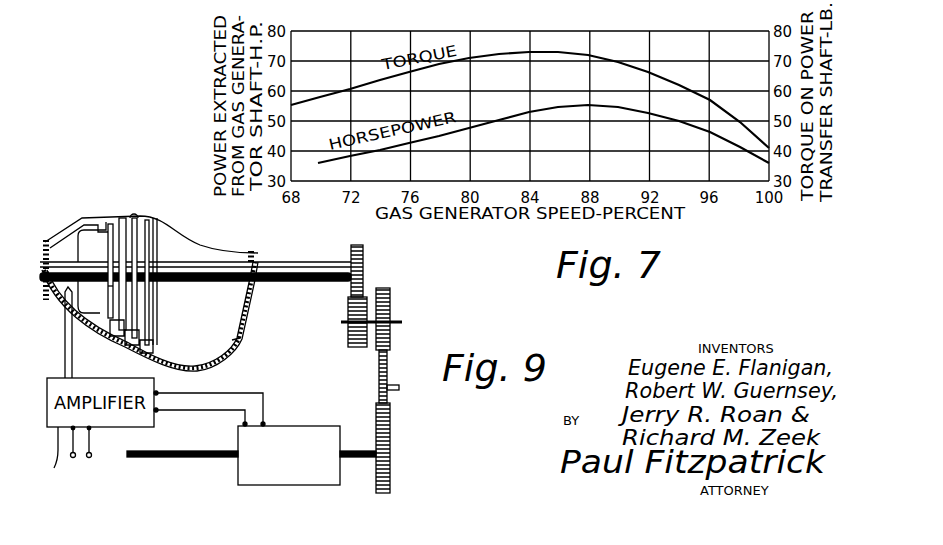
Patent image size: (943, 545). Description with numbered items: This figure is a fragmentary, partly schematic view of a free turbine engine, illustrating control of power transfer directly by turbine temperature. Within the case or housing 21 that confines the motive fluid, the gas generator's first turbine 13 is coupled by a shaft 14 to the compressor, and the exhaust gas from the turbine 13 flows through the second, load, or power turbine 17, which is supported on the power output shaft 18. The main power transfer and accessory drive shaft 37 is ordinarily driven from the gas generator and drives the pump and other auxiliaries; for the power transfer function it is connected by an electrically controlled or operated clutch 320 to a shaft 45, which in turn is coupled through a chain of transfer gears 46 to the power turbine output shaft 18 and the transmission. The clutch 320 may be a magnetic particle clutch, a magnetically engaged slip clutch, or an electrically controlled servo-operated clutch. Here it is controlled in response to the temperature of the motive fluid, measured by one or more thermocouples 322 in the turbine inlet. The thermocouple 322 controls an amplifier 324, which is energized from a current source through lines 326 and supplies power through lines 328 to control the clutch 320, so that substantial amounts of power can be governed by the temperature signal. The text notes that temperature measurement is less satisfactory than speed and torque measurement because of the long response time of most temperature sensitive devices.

The first turbine 13 is at (108, 292).
The shaft 14 is at (57, 263).
The power turbine 17 is at (134, 218).
The power output shaft 18 is at (292, 282).
The housing 21 is at (240, 339).
The main power transfer and accessory drive shaft 37 is at (193, 459).
The shaft 45 is at (354, 450).
The transfer gears 46 is at (348, 299).
The electrically controlled clutch 320 is at (285, 426).
The thermocouple 322 is at (74, 355).
The amplifier 324 is at (51, 462).
The lines 326 is at (81, 447).
The lines 328 is at (211, 408).